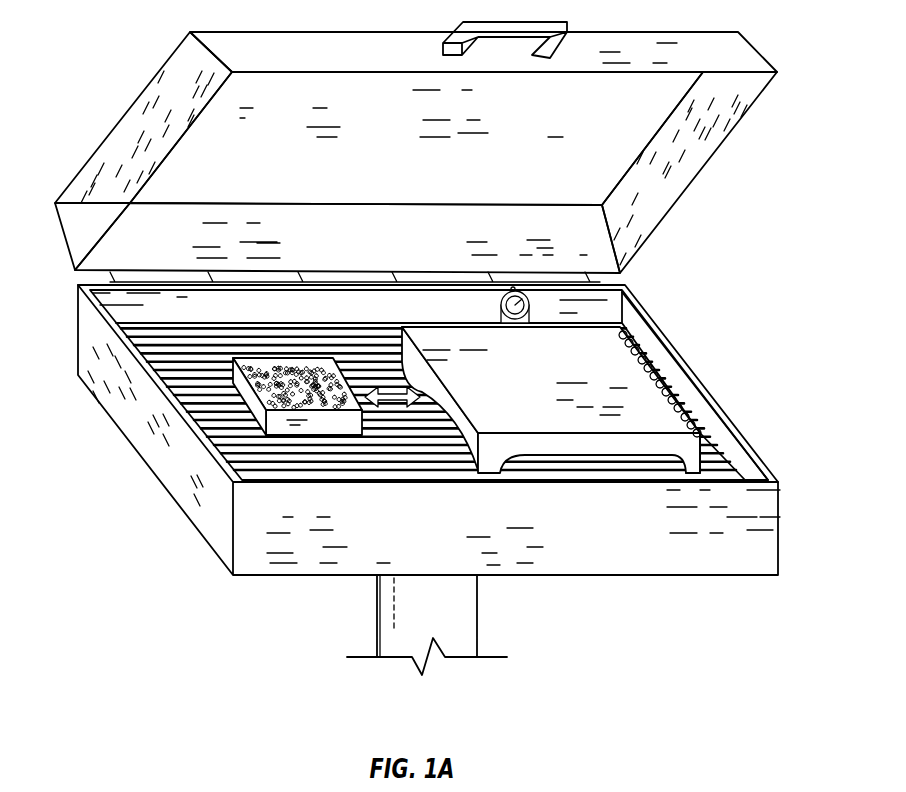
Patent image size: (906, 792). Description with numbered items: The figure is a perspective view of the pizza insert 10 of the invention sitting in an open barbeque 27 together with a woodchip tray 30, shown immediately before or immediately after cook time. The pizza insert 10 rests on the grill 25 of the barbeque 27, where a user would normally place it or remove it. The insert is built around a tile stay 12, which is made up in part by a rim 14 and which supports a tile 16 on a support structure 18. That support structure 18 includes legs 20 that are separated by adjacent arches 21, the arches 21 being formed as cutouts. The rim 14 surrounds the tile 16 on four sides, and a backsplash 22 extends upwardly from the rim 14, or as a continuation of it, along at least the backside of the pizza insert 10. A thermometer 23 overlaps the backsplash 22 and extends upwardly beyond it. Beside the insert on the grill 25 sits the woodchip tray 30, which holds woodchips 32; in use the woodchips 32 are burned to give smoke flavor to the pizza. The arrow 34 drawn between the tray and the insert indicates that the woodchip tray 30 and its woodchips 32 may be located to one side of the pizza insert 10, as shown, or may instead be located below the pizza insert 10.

The pizza insert 10 is at (668, 378).
The tile stay 12 is at (455, 397).
The rim 14 is at (567, 435).
The tile 16 is at (605, 368).
The support structure 18 is at (687, 442).
The legs 20 is at (402, 328).
The arches 21 is at (578, 438).
The backsplash 22 is at (632, 330).
The thermometer 23 is at (535, 298).
The grill 25 is at (715, 458).
The barbeque 27 is at (770, 543).
The woodchip tray 30 is at (262, 420).
The woodchips 32 is at (293, 375).
The arrow 34 is at (393, 395).